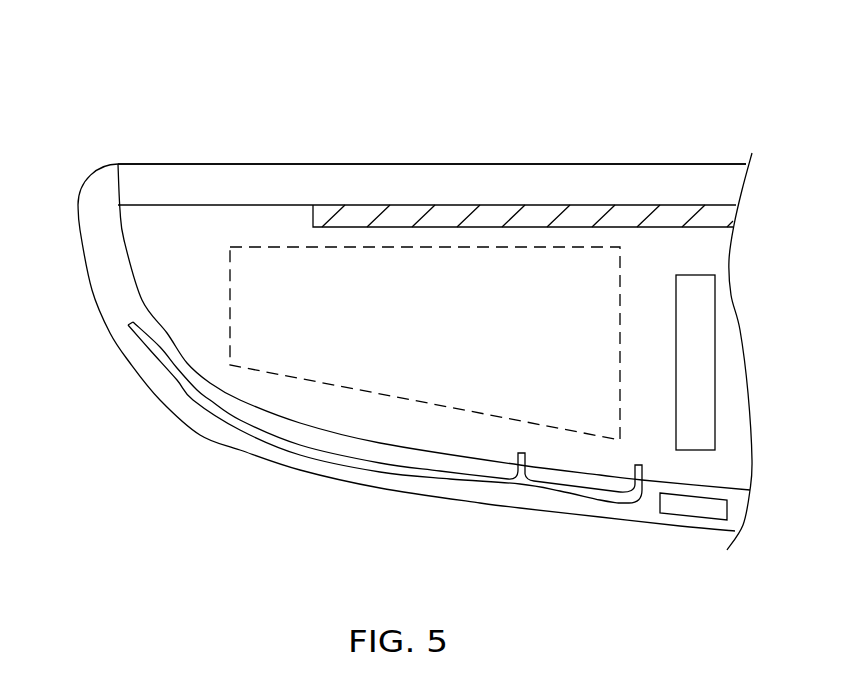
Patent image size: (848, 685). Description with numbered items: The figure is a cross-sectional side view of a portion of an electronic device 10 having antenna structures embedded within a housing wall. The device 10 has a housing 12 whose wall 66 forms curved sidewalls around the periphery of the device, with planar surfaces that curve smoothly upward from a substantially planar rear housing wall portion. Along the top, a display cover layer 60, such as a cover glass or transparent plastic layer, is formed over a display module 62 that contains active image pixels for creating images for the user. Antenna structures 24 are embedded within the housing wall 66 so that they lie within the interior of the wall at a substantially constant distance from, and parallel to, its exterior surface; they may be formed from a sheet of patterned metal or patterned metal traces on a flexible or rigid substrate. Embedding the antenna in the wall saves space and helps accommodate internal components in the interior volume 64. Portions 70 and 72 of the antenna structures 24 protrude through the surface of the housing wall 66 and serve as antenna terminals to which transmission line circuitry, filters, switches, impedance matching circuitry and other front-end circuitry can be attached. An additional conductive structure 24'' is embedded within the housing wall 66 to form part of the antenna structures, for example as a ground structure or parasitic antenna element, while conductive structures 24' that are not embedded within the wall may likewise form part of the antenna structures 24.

The electronic device 10 is at (115, 73).
The housing 12 is at (86, 329).
The antenna structures 24 is at (373, 417).
The conductive structures 24' is at (746, 367).
The conductive structure 24'' is at (693, 539).
The display cover layer 60 is at (530, 182).
The display module 62 is at (664, 215).
The interior volume 64 is at (268, 250).
The housing wall 66 is at (174, 411).
The portion of antenna structures 70 is at (527, 460).
The portion of antenna structures 72 is at (637, 468).